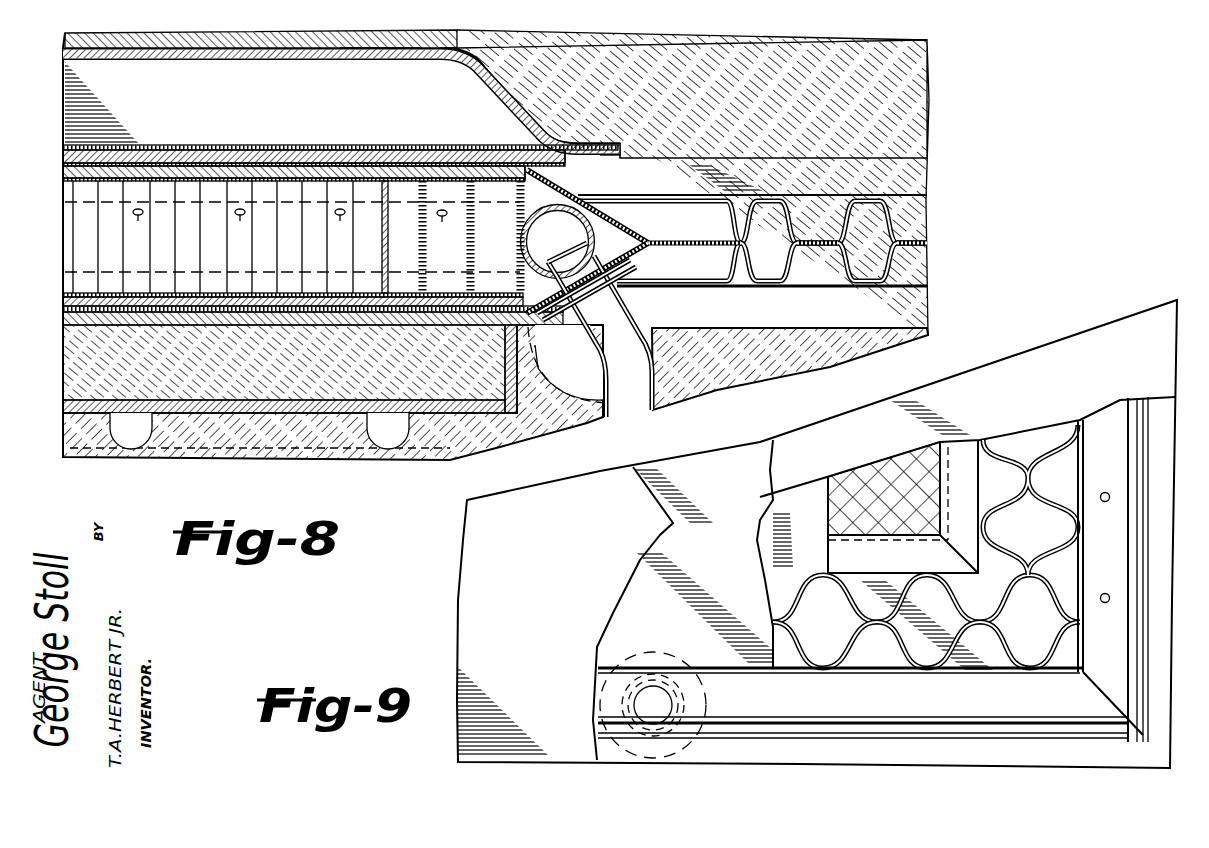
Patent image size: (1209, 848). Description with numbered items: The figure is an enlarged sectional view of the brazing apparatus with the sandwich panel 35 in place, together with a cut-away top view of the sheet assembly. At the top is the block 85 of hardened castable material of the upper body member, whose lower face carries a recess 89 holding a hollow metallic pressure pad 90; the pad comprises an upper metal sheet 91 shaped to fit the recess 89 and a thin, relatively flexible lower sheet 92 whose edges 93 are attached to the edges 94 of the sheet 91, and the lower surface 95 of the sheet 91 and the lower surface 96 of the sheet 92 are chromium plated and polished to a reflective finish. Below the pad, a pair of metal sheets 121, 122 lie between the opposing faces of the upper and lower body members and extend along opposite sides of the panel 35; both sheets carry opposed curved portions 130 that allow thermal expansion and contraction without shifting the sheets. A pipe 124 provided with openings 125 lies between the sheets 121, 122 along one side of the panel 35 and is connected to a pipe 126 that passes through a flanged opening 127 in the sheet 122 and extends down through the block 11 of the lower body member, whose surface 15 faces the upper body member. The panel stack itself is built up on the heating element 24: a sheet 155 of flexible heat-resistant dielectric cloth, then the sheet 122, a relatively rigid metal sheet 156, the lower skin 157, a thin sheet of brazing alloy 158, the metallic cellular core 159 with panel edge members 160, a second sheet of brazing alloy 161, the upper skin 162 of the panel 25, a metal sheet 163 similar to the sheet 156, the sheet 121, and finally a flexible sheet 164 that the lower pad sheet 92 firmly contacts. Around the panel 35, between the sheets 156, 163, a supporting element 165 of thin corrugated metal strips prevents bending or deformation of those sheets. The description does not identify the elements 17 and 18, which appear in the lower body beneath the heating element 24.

In FIG. 8, the block 11 is at (710, 384).
In FIG. 8, the surface 15 is at (412, 327).
In FIG. 8, the base slab 17 is at (276, 414).
In FIG. 8, the channel 18 is at (140, 440).
In FIG. 8, the heating element 24 is at (192, 398).
In FIG. 8, the panel 25 is at (462, 410).
In FIG. 8, the panel 35 is at (72, 213).
In FIG. 8, the block 85 is at (928, 78).
In FIG. 8, the recess 89 is at (373, 60).
In FIG. 8, the pressure pad 90 is at (85, 73).
In FIG. 8, the upper metal sheet 91 is at (433, 60).
In FIG. 8, the lower sheet 92 is at (334, 147).
In FIG. 8, the edges 93 is at (617, 141).
In FIG. 8, the edges 94 is at (622, 151).
In FIG. 8, the lower surface 95 is at (318, 60).
In FIG. 8, the lower surface 96 is at (576, 156).
In FIG. 8, the metal sheet 121 is at (615, 224).
In FIG. 9, the metal sheet 121 is at (1122, 331).
In FIG. 8, the metal sheet 122 is at (640, 250).
In FIG. 9, the metal sheet 122 is at (827, 757).
In FIG. 8, the pipe 124 is at (497, 208).
In FIG. 9, the pipe 124 is at (1140, 524).
In FIG. 8, the openings 125 is at (293, 226).
In FIG. 9, the openings 125 is at (1106, 492).
In FIG. 8, the pipe 126 is at (645, 348).
In FIG. 9, the pipe 126 is at (682, 703).
In FIG. 8, the flanged opening 127 is at (628, 270).
In FIG. 9, the flanged opening 127 is at (704, 683).
In FIG. 8, the curved portions 130 is at (880, 203).
In FIG. 8, the sheet 155 is at (305, 322).
In FIG. 8, the metal sheet 156 is at (228, 322).
In FIG. 8, the lower skin 157 is at (178, 324).
In FIG. 8, the brazing alloy 158 is at (133, 324).
In FIG. 8, the cellular core 159 is at (75, 252).
In FIG. 9, the cellular core 159 is at (940, 476).
In FIG. 8, the panel edge members 160 is at (388, 230).
In FIG. 9, the panel edge members 160 is at (967, 576).
In FIG. 8, the brazing alloy 161 is at (170, 150).
In FIG. 8, the upper skin 162 is at (212, 150).
In FIG. 9, the upper skin 162 is at (822, 563).
In FIG. 8, the metal sheet 163 is at (252, 150).
In FIG. 9, the metal sheet 163 is at (611, 615).
In FIG. 8, the sheet 164 is at (297, 150).
In FIG. 8, the supporting element 165 is at (474, 257).
In FIG. 9, the supporting element 165 is at (1005, 497).